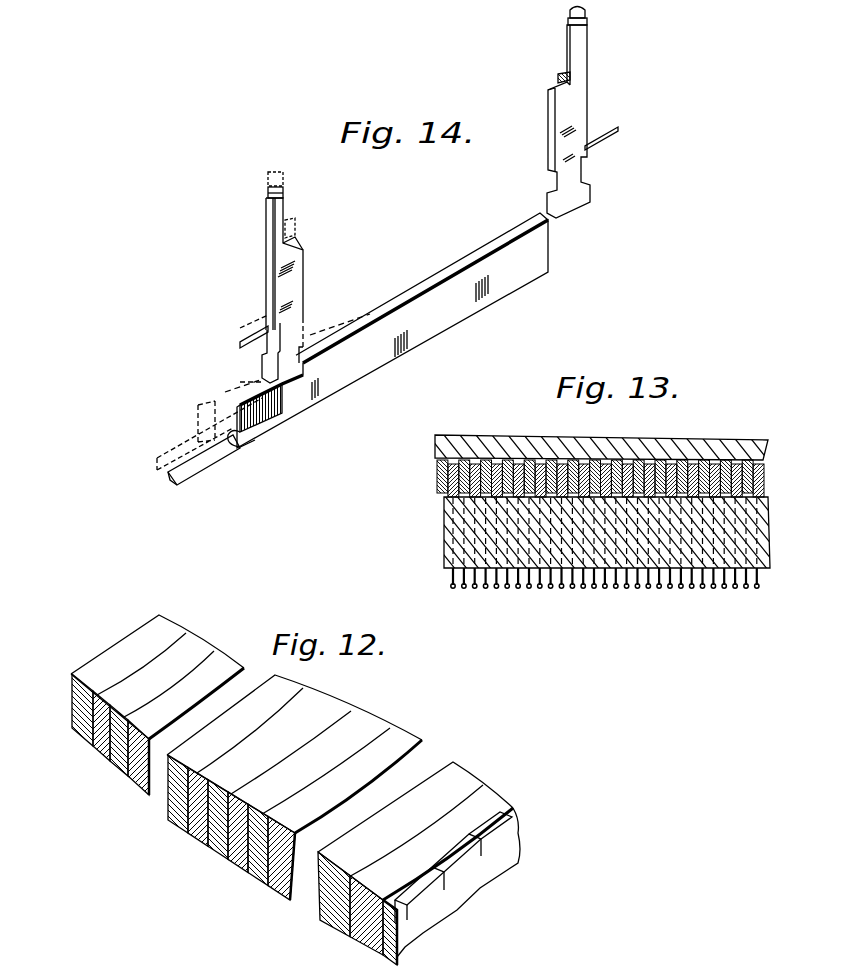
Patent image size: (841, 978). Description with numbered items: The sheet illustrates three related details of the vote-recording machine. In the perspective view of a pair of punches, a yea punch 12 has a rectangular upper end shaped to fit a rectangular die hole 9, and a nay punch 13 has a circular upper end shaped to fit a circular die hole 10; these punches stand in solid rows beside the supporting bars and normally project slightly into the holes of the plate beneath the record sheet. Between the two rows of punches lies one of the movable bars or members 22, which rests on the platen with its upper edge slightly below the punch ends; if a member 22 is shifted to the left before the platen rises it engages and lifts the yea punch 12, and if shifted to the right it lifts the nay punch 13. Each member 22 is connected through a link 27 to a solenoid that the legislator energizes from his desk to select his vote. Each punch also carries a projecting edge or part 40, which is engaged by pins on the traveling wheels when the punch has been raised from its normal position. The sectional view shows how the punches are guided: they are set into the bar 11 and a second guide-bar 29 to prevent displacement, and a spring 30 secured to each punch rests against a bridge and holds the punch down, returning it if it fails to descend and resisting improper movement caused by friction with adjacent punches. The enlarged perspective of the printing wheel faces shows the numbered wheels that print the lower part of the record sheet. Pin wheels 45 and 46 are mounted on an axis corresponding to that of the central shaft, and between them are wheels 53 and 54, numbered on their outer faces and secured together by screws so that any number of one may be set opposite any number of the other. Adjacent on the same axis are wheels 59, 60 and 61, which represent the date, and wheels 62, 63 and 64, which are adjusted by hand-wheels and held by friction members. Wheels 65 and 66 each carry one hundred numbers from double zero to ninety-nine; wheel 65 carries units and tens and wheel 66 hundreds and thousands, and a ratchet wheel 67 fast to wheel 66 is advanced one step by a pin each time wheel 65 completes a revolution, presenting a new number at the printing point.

In FIG. 14, the rectangular holes 9 is at (287, 184).
In FIG. 14, the circular holes 10 is at (586, 23).
In FIG. 13, the bars or beams 11 is at (445, 540).
In FIG. 14, the punches 12 is at (300, 287).
In FIG. 14, the punches 13 is at (577, 106).
In FIG. 13, the punches 13 is at (440, 481).
In FIG. 14, the movable bars or members 22 is at (386, 330).
In FIG. 14, the links 27 is at (190, 470).
In FIG. 13, the guide-bar 29 is at (735, 444).
In FIG. 13, the spring 30 is at (755, 590).
In FIG. 14, the projecting edge or part 40 is at (296, 232).
In FIG. 12, the wheel 45 is at (123, 645).
In FIG. 12, the wheel 46 is at (156, 790).
In FIG. 12, the wheel 53 is at (104, 746).
In FIG. 12, the wheel 54 is at (120, 776).
In FIG. 12, the wheel 59 is at (184, 828).
In FIG. 12, the wheel 60 is at (220, 838).
In FIG. 12, the wheel 61 is at (340, 722).
In FIG. 12, the wheel 62 is at (362, 730).
In FIG. 12, the wheel 63 is at (388, 741).
In FIG. 12, the wheel 64 is at (408, 743).
In FIG. 12, the wheel 65 is at (334, 920).
In FIG. 12, the wheel 66 is at (380, 940).
In FIG. 12, the ratchet wheel 67 is at (488, 877).